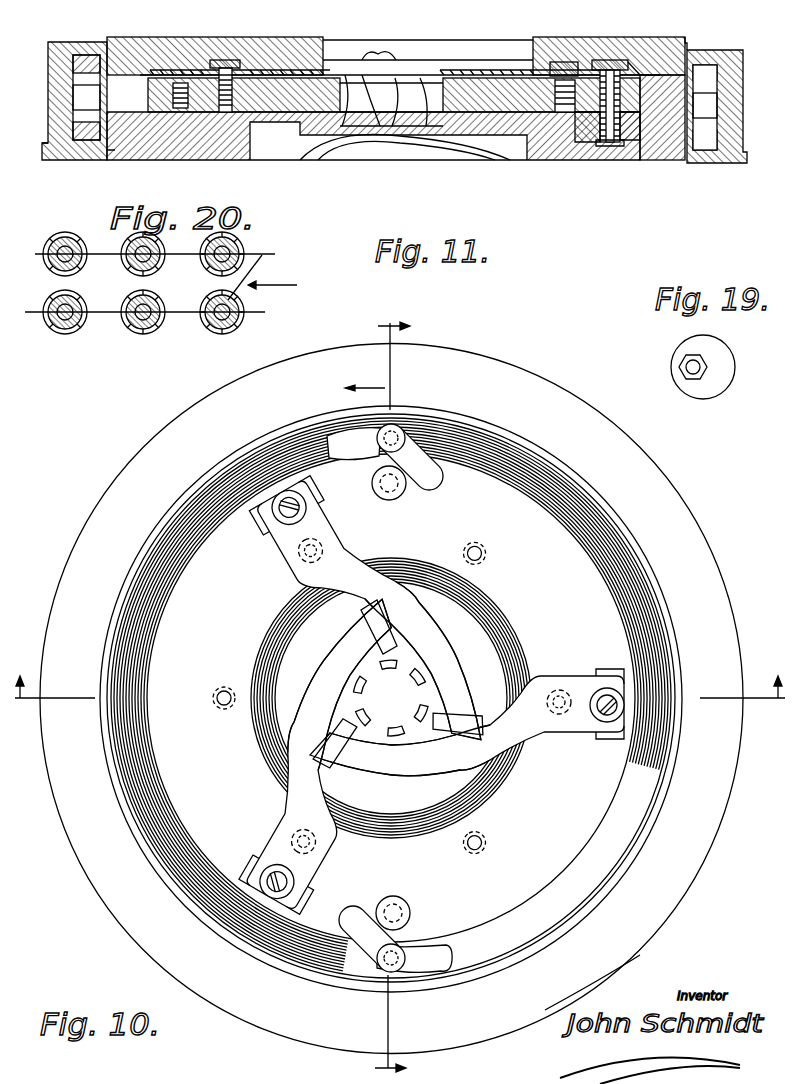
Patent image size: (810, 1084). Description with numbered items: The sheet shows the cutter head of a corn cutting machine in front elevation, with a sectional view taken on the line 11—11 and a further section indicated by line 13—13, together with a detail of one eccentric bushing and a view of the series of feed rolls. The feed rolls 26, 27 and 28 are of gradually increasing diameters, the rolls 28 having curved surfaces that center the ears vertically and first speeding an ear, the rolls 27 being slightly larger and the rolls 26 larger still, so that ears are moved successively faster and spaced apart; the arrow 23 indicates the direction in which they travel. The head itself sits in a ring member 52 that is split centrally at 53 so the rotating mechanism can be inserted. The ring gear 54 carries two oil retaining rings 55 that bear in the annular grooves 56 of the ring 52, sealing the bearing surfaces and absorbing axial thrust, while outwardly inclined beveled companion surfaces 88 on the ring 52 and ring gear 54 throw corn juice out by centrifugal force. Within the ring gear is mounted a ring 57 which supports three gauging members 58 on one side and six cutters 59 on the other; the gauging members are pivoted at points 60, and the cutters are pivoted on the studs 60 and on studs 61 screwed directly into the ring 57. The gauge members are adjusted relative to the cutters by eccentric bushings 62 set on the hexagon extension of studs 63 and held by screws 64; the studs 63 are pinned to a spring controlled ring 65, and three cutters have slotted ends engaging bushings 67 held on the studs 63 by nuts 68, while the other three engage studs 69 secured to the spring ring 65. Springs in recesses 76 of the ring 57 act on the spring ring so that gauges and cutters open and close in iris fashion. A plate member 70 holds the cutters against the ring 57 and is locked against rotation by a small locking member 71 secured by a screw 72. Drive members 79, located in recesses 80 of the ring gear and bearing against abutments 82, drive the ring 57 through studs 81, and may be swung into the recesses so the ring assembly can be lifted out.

In FIG. 10, the section line 11— 11 is at (394, 703).
In FIG. 10, the section line 13— 13 is at (404, 698).
In FIG. 20, the direction arrow / row of elements 23 is at (240, 285).
In FIG. 20, the feed rolls 26 is at (48, 297).
In FIG. 20, the feed rolls 27 is at (126, 297).
In FIG. 20, the feed rolls 28 is at (206, 297).
In FIG. 11, the ring member 52 is at (732, 158).
In FIG. 10, the ring member 52 is at (391, 699).
In FIG. 11, the split 53 is at (74, 101).
In FIG. 10, the split 53 is at (82, 700).
In FIG. 11, the ring gear 54 is at (672, 122).
In FIG. 11, the oil retaining rings 55 is at (715, 62).
In FIG. 11, the annular grooves 56 is at (700, 60).
In FIG. 11, the ring 57 is at (592, 142).
In FIG. 10, the ring 57 is at (391, 698).
In FIG. 11, the gauging members 58 is at (490, 150).
In FIG. 10, the gauging members 58 is at (387, 702).
In FIG. 11, the cutters 59 is at (372, 104).
In FIG. 10, the cutters 59 is at (413, 684).
In FIG. 11, the pivot points or studs 60 is at (540, 78).
In FIG. 10, the pivot points or studs 60 is at (298, 553).
In FIG. 11, the studs 61 is at (224, 62).
In FIG. 10, the studs 61 is at (488, 548).
In FIG. 11, the eccentric bushings 62 is at (636, 140).
In FIG. 19, the eccentric bushings 62 is at (730, 363).
In FIG. 10, the eccentric bushings 62 is at (302, 498).
In FIG. 11, the stud 63 is at (600, 142).
In FIG. 19, the stud 63 is at (684, 380).
In FIG. 11, the screw 64 is at (612, 146).
In FIG. 11, the spring controlled ring 65 is at (600, 62).
In FIG. 11, the bushings 67 is at (632, 60).
In FIG. 11, the nuts 68 is at (612, 72).
In FIG. 11, the studs 69 is at (177, 80).
In FIG. 11, the plate member 70 is at (256, 72).
In FIG. 11, the locking member 71 is at (325, 60).
In FIG. 11, the screw 72 is at (380, 54).
In FIG. 11, the recesses 76 is at (160, 116).
In FIG. 10, the drive members 79 is at (424, 478).
In FIG. 10, the recess 80 is at (366, 444).
In FIG. 10, the stud 81 is at (392, 500).
In FIG. 10, the abutment 82 is at (410, 434).
In FIG. 11, the beveled companion surfaces 88 is at (100, 156).